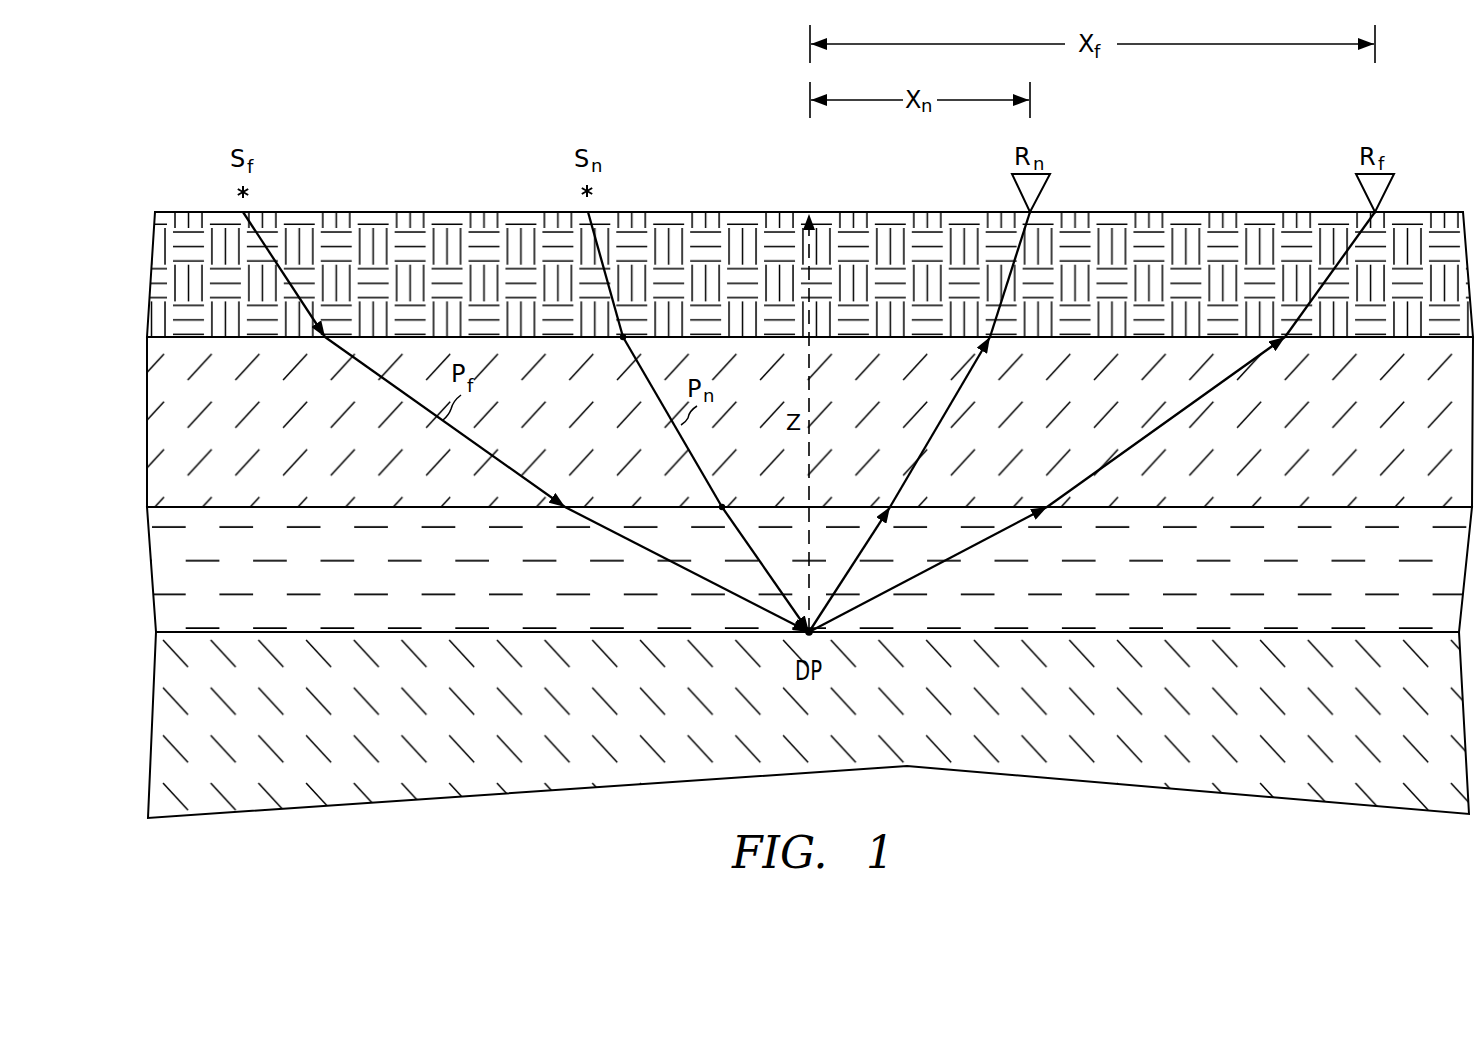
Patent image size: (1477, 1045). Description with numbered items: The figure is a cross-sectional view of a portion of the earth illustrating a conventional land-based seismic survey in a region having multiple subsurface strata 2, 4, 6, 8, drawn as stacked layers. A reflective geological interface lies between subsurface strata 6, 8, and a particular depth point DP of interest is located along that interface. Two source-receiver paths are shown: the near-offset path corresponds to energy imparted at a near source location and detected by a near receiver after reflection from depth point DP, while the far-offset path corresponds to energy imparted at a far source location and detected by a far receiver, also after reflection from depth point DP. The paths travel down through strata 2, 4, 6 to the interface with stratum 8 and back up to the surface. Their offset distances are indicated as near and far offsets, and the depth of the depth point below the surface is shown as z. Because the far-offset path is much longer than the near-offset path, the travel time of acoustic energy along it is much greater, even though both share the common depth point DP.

The subsurface stratum 2 is at (1401, 288).
The subsurface stratum 4 is at (1400, 436).
The subsurface stratum 6 is at (1436, 562).
The subsurface stratum 8 is at (1400, 730).